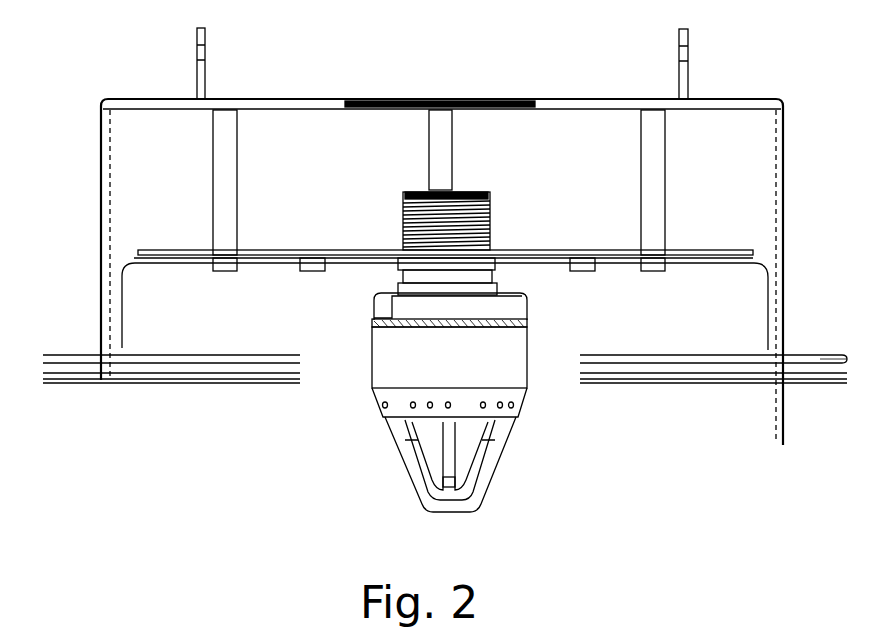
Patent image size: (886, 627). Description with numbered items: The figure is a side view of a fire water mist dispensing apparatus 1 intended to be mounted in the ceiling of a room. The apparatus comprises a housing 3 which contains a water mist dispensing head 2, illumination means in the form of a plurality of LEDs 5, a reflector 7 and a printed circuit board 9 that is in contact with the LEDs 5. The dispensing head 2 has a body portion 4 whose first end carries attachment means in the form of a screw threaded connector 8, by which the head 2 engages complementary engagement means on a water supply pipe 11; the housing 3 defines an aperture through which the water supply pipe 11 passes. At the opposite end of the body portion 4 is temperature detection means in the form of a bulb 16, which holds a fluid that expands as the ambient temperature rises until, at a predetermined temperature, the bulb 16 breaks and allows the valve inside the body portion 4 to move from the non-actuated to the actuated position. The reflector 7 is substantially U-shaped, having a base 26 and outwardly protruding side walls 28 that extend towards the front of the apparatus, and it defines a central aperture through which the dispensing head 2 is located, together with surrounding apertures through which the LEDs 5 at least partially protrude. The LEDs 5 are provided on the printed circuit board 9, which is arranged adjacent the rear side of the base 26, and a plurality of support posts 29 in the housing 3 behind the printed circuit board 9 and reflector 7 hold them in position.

The fire water mist dispensing apparatus 1 is at (90, 78).
The water mist dispensing head 2 is at (368, 456).
The housing 3 is at (100, 128).
The body portion 4 is at (390, 374).
The LEDs 5 is at (228, 272).
The reflector 7 is at (120, 286).
The screw threaded connector 8 is at (490, 225).
The printed circuit board 9 is at (128, 254).
The water supply pipe 11 is at (440, 157).
The bulb 16 is at (448, 468).
The base 26 is at (150, 268).
The side walls 28 is at (120, 335).
The support posts 29 is at (230, 175).